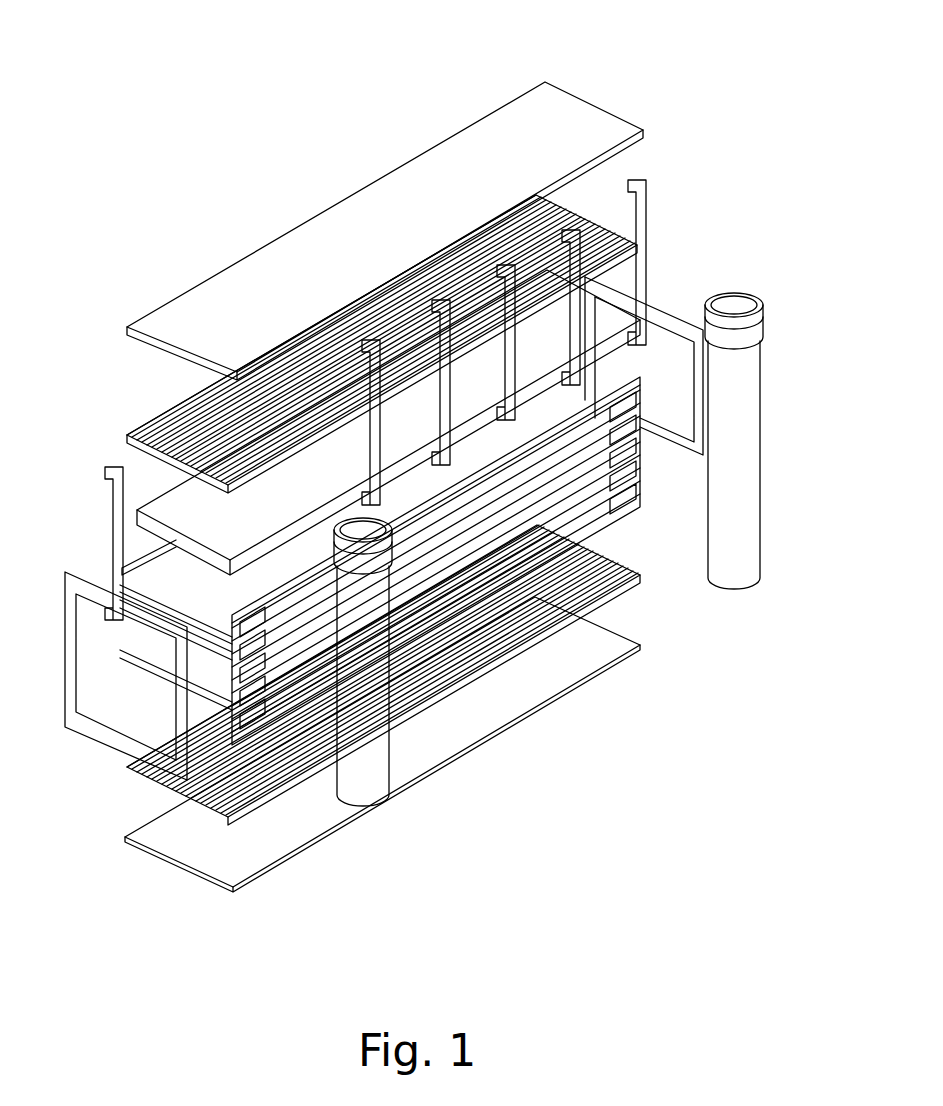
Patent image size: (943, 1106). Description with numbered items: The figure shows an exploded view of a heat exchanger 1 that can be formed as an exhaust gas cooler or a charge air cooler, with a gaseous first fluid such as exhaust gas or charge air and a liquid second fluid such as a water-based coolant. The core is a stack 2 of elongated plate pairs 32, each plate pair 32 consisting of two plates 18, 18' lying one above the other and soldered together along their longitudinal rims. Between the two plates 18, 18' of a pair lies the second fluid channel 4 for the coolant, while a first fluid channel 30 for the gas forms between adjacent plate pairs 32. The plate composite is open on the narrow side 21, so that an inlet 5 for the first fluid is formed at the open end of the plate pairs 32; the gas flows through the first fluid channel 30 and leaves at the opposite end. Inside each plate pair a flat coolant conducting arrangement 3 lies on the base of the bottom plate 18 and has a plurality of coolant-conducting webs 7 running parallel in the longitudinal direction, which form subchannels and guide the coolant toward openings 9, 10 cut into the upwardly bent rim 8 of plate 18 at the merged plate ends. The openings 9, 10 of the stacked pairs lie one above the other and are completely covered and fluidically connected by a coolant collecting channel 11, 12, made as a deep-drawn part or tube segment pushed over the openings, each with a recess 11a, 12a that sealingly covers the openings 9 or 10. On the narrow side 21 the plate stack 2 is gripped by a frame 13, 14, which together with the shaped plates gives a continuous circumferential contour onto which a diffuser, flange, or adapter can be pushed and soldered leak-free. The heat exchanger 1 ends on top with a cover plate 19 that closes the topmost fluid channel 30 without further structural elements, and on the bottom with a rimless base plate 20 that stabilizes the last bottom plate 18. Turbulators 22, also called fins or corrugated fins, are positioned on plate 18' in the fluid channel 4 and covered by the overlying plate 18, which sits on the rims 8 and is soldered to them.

The heat exchanger 1 is at (222, 182).
The stack 2 is at (608, 560).
The coolant conducting arrangement 3 is at (598, 215).
The second fluid channel 4 is at (165, 690).
The inlet 5 is at (172, 642).
The coolant-conducting webs 7 is at (180, 398).
The rim 8 is at (464, 522).
The opening 9 is at (255, 705).
The opening 10 is at (620, 495).
The coolant collecting channel 11 is at (372, 767).
The recess 11a is at (440, 580).
The coolant collecting channel 12 is at (742, 458).
The recess 12a is at (712, 452).
The frame 13 is at (83, 733).
The frame 14 is at (660, 447).
The plate 18 is at (651, 339).
The plate 18' is at (127, 576).
The cover plate 19 is at (585, 110).
The base plate 20 is at (180, 845).
The narrow side 21 is at (127, 567).
The turbulators 22 is at (190, 523).
The first fluid channel 30 is at (193, 727).
The plate pairs 32 is at (330, 660).